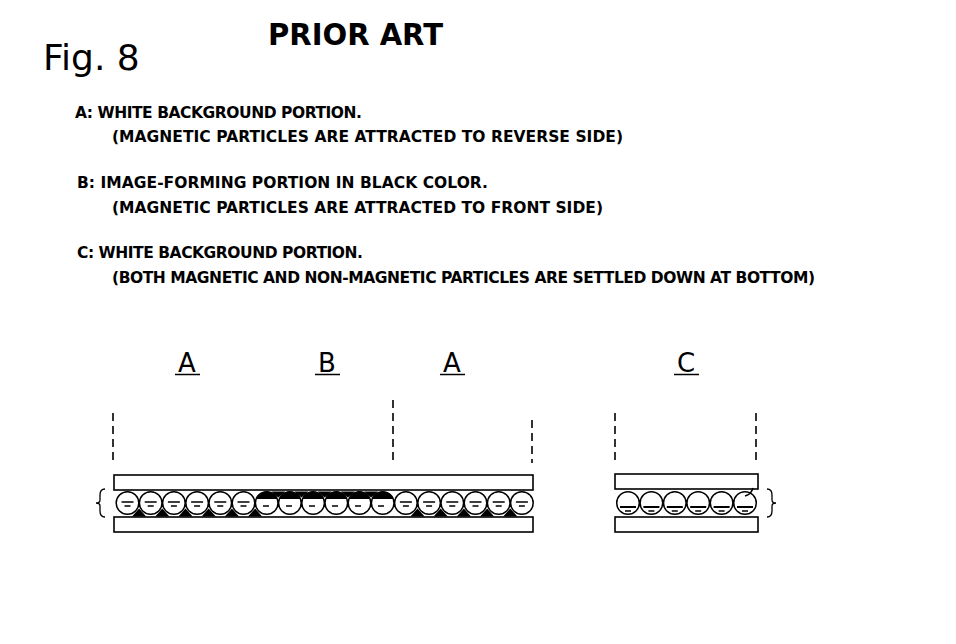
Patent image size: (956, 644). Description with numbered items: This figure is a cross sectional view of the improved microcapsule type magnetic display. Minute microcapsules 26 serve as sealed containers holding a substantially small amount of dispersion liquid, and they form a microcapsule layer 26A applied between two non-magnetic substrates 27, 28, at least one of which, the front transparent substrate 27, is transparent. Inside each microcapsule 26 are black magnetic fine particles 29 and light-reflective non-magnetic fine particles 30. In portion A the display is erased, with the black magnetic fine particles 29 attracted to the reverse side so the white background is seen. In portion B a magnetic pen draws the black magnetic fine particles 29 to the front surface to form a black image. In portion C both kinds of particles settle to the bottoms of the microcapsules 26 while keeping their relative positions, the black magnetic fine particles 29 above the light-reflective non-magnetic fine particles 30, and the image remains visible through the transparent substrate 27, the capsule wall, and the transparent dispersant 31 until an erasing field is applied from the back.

The microcapsule 26 is at (383, 514).
The microcapsule layer 26A is at (102, 518).
The transparent substrate 27 is at (525, 484).
The non-magnetic substrate 28 is at (457, 523).
The black magnetic fine particles 29 is at (382, 500).
The light-reflective non-magnetic fine particles 30 is at (241, 496).
The transparent dispersant 31 is at (744, 495).